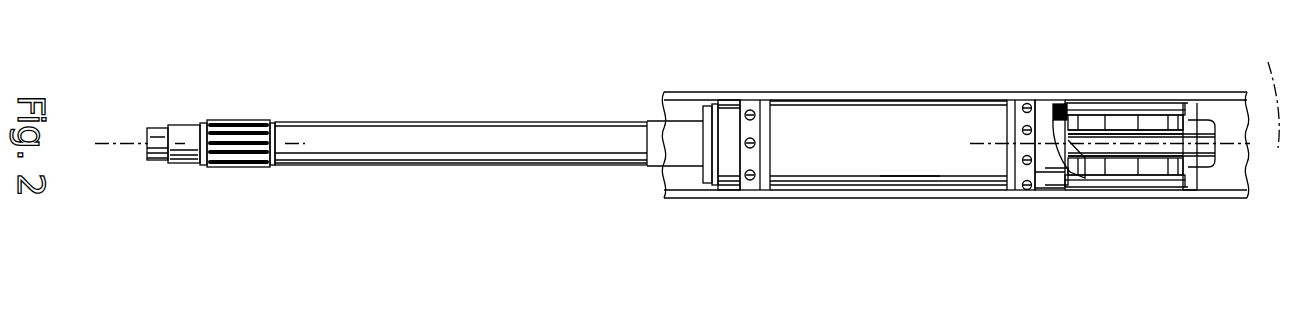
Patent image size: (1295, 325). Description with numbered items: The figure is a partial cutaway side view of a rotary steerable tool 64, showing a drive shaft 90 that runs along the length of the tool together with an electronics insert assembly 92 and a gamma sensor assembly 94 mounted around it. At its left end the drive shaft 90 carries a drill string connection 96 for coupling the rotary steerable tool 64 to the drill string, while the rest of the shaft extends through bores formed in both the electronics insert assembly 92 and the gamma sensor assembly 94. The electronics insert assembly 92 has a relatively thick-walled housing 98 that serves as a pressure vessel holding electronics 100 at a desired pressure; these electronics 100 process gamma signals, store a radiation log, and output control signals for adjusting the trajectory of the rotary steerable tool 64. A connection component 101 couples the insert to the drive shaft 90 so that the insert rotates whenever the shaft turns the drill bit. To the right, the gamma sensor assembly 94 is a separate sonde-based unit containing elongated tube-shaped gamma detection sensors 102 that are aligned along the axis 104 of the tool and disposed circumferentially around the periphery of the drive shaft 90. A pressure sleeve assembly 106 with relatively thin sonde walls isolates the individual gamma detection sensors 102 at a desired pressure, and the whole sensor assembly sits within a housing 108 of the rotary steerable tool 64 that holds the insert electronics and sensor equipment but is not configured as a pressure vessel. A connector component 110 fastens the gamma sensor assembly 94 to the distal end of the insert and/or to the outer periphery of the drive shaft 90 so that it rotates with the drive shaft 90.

The rotary steerable tool 64 is at (616, 220).
The drive shaft 90 is at (417, 150).
The electronics insert assembly 92 is at (748, 86).
The gamma sensor assembly 94 is at (1213, 86).
The drill string connection 96 is at (184, 163).
The housing 98 is at (822, 158).
The electronics 100 is at (910, 160).
The connection component 101 is at (720, 107).
The gamma detection sensors 102 is at (1125, 168).
The axis 104 is at (1268, 80).
The pressure sleeve assembly 106 is at (1138, 186).
The housing 108 is at (1073, 198).
The connector component 110 is at (1047, 177).